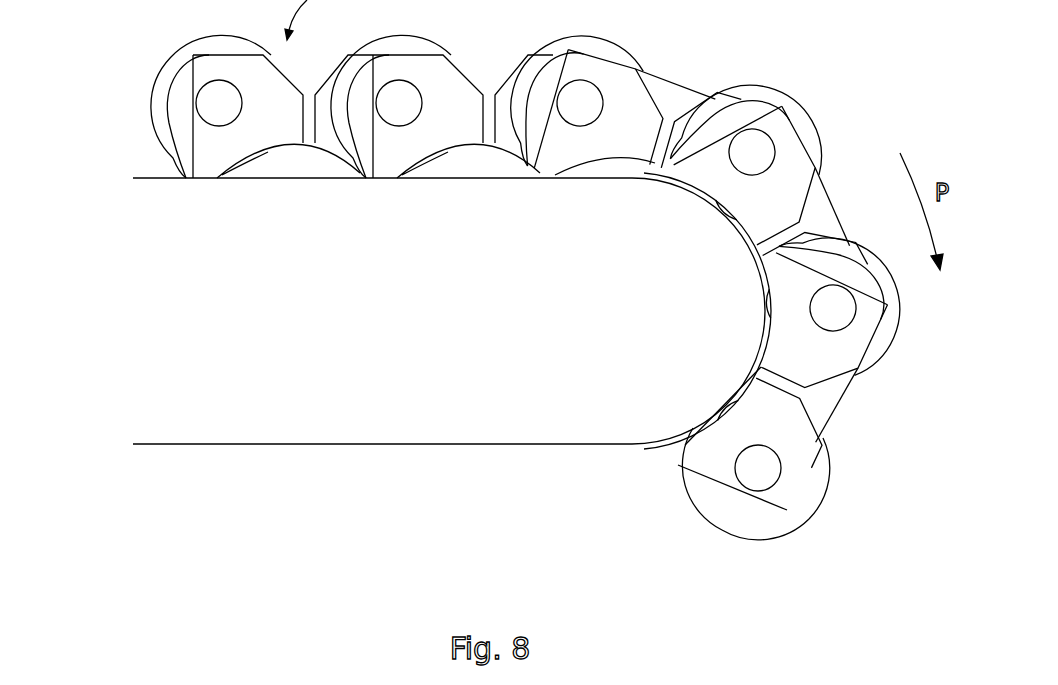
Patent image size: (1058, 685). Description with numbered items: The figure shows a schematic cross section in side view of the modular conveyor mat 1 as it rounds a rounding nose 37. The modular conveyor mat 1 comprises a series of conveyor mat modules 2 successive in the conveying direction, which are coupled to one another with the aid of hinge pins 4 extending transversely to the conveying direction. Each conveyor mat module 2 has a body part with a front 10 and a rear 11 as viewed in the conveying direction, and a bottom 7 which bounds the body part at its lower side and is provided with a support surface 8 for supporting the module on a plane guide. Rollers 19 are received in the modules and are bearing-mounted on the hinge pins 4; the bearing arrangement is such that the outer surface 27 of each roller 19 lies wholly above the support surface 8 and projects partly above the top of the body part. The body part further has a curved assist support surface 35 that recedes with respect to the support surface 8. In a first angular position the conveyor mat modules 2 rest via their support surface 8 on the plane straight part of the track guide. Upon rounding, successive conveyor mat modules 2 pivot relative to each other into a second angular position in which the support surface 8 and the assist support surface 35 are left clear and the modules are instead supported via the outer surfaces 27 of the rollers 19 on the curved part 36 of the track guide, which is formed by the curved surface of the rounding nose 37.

The modular conveyor mat 1 is at (481, 305).
The conveyor mat module 2 is at (558, 305).
The hinge pin 4 is at (763, 470).
The bottom 7 is at (291, 152).
The support surface 8 is at (385, 180).
The front 10 is at (708, 530).
The rear 11 is at (122, 120).
The roller 19 is at (810, 502).
The outer surface 27 is at (793, 533).
The assist support surface 35 is at (743, 379).
The curved part of the track guide 36 is at (688, 193).
The rounding nose 37 is at (431, 381).